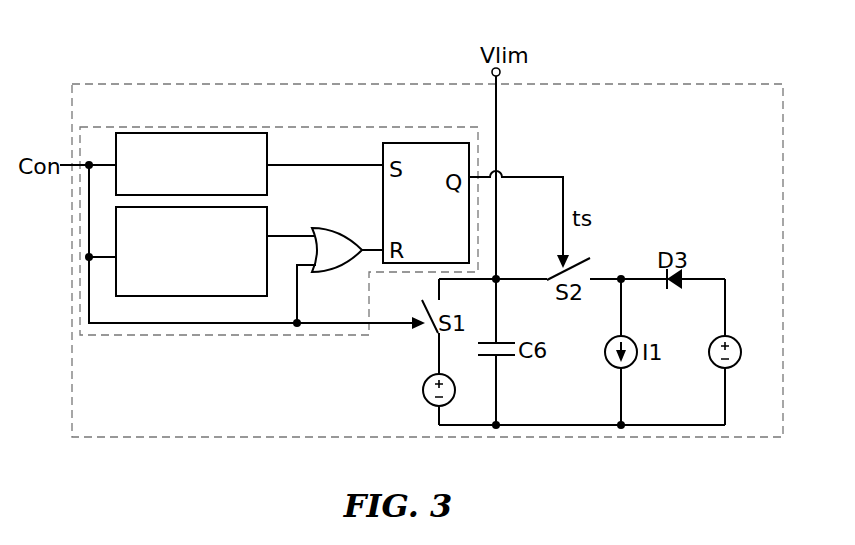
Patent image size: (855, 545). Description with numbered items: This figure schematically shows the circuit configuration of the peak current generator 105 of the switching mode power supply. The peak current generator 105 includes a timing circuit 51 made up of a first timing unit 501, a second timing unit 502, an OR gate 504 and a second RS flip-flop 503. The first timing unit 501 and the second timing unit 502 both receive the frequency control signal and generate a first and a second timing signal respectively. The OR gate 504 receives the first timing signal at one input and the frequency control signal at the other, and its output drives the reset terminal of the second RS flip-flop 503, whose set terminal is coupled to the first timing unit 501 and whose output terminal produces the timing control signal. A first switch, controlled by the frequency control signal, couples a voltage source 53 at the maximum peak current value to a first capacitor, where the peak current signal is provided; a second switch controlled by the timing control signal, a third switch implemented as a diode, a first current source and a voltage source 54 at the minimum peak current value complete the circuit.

The peak current generator 105 is at (124, 87).
The timing circuit 51 is at (313, 126).
The first timing unit 501 is at (191, 164).
The second timing unit 502 is at (191, 251).
The second RS flip-flop 503 is at (445, 217).
The OR gate 504 is at (337, 237).
The voltage source 53 is at (424, 390).
The voltage source 54 is at (742, 352).